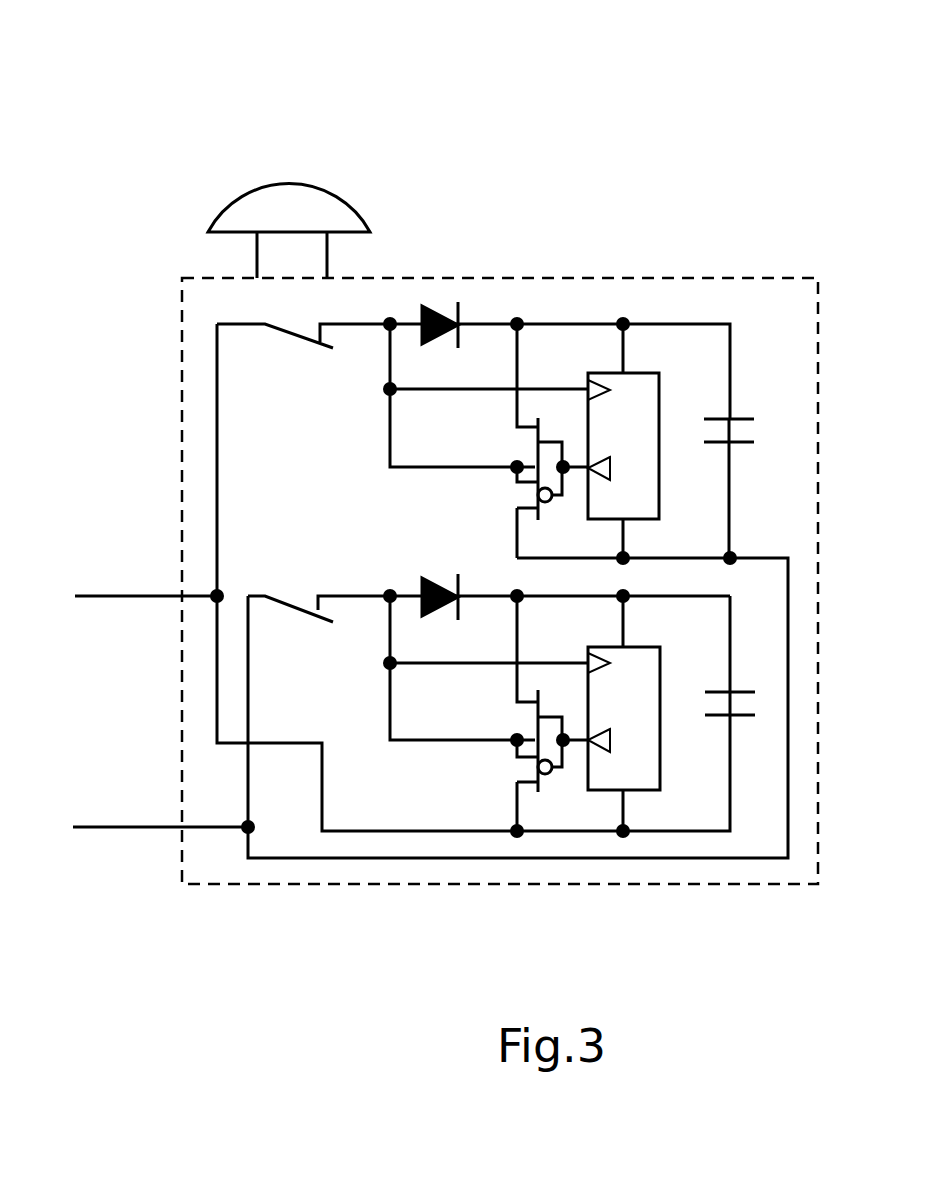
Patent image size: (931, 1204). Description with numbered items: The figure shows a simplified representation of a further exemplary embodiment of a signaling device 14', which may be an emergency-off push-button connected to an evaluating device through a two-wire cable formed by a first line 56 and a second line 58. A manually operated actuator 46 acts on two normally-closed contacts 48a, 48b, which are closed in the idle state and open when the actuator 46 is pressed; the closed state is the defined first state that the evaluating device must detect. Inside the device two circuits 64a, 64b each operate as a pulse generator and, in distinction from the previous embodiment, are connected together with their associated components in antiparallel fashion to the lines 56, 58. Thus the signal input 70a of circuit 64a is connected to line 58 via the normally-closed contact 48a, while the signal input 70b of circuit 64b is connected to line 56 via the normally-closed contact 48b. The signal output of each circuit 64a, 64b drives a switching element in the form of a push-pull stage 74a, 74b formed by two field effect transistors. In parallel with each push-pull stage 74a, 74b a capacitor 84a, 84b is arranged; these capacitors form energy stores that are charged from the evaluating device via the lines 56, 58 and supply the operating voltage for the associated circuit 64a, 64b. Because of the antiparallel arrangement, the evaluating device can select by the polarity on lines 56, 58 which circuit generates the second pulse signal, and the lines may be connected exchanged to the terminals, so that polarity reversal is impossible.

The signaling device 14' is at (509, 446).
The actuator 46 is at (303, 185).
The normally-closed contact 48a is at (292, 333).
The normally-closed contact 48b is at (290, 607).
The first line 56 is at (92, 830).
The second line 58 is at (100, 598).
The circuit 64a is at (714, 356).
The circuit 64b is at (606, 795).
The signal input 70a is at (598, 378).
The signal input 70b is at (592, 657).
The push-pull stage 74a is at (529, 418).
The push-pull stage 74b is at (516, 769).
The capacitor 84a is at (743, 418).
The capacitor 84b is at (743, 718).